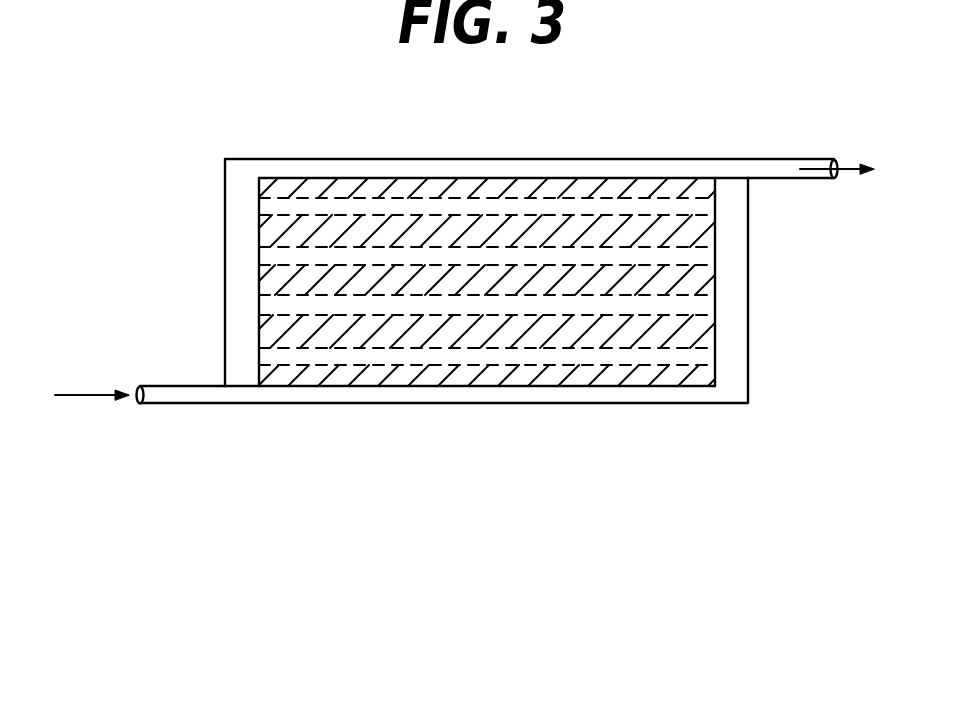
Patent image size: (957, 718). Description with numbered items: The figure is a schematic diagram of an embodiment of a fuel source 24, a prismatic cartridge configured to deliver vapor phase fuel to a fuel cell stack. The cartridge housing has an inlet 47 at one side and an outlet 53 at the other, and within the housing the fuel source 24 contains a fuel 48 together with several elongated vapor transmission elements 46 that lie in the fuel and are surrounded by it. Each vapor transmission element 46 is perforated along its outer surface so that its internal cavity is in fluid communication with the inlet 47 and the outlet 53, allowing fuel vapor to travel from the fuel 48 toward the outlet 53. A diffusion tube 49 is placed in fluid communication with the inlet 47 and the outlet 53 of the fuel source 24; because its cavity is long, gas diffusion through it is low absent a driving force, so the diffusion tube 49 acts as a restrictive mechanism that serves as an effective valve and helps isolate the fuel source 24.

The fuel source 24 is at (740, 92).
The vapor transmission element 46 is at (263, 263).
The inlet 47 is at (140, 404).
The fuel 48 is at (695, 280).
The diffusion tube 49 is at (495, 165).
The outlet 53 is at (834, 158).